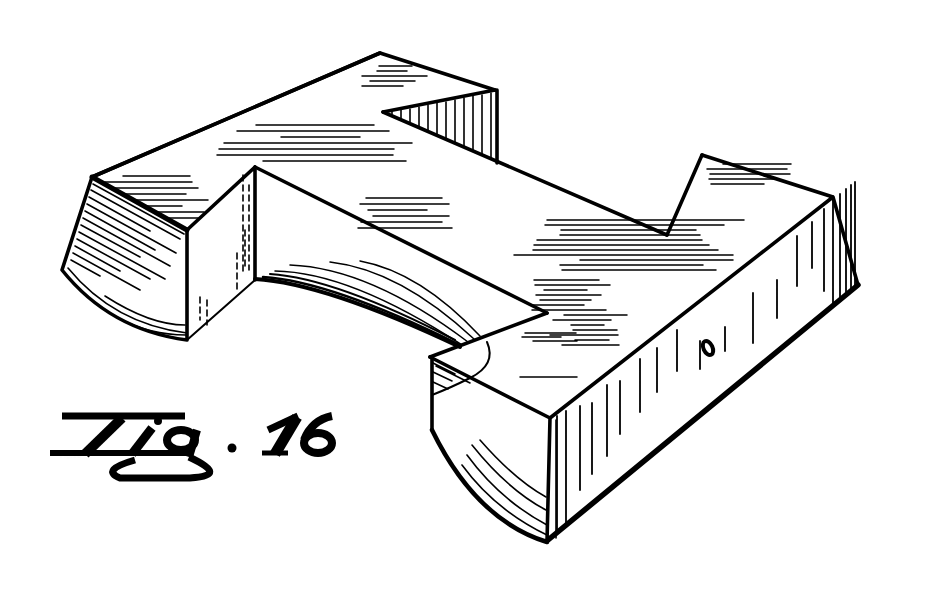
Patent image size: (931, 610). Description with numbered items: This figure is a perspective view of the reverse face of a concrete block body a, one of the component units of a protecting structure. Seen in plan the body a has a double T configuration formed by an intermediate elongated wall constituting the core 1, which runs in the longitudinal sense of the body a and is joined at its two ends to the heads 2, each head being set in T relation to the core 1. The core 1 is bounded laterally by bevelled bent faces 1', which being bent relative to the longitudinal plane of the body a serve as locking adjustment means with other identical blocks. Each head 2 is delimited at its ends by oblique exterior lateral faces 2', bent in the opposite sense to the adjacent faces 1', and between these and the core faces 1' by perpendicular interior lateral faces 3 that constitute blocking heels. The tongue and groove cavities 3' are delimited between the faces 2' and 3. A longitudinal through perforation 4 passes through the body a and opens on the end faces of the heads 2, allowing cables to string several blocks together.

The body of block a is at (230, 100).
The core of block 1 is at (461, 225).
The bent lateral faces of the core 1' is at (357, 315).
The heads of block 2 is at (475, 297).
The exterior lateral faces of the heads 2' is at (309, 359).
The interior lateral faces of the heads 3 is at (444, 241).
The tongue and groove cavities 3' is at (629, 176).
The longitudinal through perforation 4 is at (712, 356).